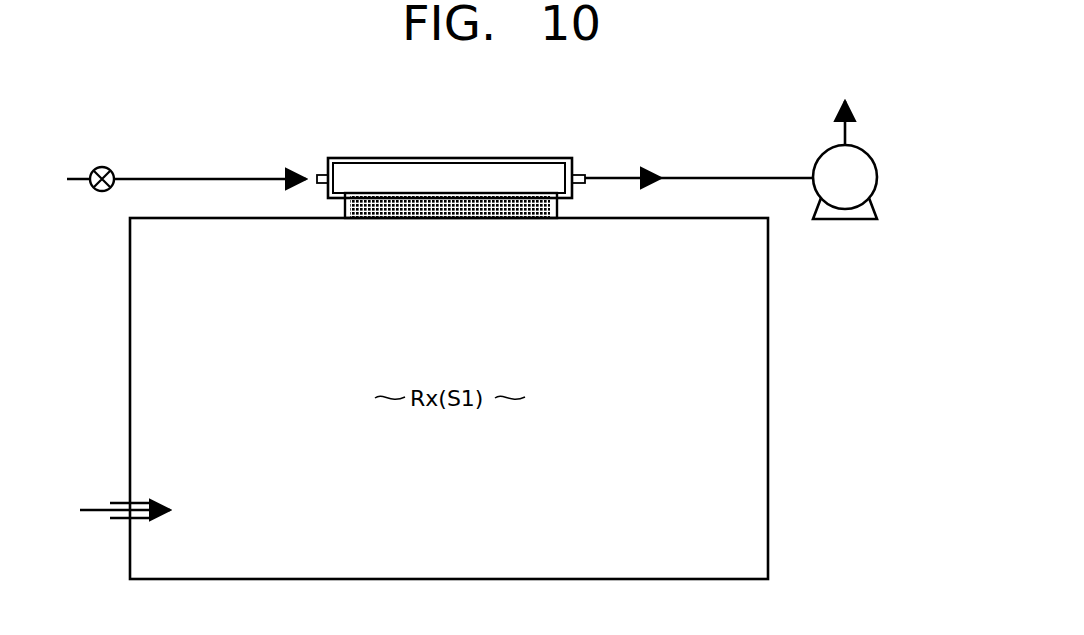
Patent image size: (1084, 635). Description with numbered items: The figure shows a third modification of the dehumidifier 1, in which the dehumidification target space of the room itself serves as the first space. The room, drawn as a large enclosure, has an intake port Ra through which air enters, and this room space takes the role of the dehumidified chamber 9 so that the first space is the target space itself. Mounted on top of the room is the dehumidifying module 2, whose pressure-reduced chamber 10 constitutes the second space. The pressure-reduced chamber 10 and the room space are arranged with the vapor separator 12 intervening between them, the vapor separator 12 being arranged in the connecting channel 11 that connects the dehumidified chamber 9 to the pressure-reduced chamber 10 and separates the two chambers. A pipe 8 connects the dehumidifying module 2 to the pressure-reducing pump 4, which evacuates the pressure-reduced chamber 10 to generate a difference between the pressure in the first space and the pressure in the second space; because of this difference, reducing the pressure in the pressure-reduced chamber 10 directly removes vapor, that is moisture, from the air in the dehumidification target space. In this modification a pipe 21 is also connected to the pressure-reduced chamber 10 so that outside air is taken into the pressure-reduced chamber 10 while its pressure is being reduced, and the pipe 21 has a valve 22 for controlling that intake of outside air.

The dehumidifier 1 is at (620, 131).
The dehumidifying module 2 is at (451, 143).
The pressure-reducing pump 4 is at (877, 177).
The pipe 8 is at (741, 177).
The dehumidified chamber 9 is at (768, 467).
The pressure-reduced chamber 10 is at (415, 160).
The connecting channel 11 is at (347, 193).
The vapor separator 12 is at (385, 203).
The pipe 21 is at (207, 178).
The valve 22 is at (102, 167).
The intake port Ra is at (117, 503).